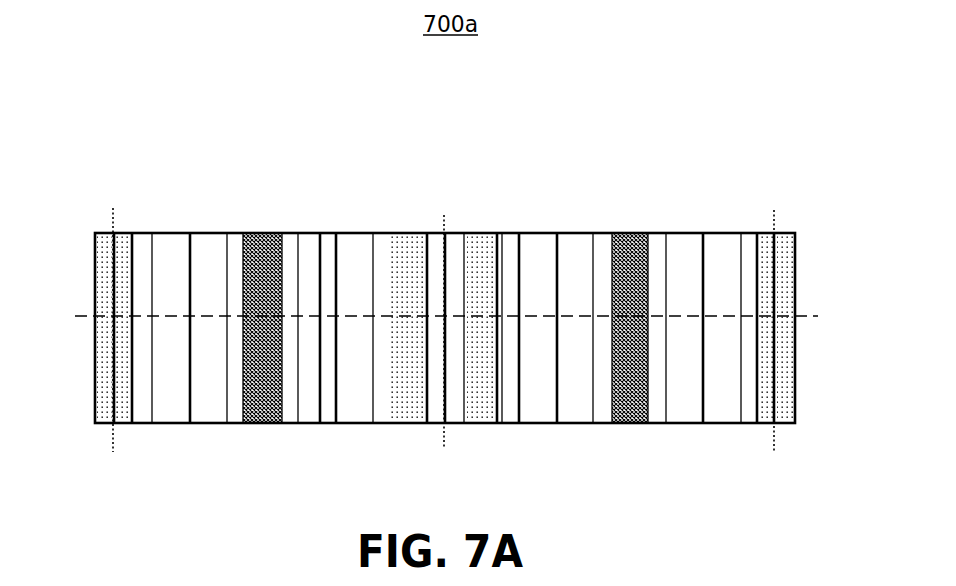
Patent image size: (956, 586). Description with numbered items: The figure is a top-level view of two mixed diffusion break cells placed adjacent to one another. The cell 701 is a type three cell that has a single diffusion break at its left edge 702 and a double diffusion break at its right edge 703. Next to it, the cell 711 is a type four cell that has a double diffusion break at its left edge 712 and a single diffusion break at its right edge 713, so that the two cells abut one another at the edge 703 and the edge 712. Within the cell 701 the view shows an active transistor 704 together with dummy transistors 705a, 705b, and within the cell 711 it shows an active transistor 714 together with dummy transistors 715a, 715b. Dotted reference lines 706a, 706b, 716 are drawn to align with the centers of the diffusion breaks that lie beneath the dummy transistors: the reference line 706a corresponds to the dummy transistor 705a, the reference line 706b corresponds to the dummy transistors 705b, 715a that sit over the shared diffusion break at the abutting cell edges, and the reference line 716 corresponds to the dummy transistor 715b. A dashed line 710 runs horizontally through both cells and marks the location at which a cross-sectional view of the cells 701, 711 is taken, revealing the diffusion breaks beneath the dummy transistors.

The cell 701 is at (173, 235).
The left edge of cell 702 is at (110, 402).
The right edge of cell 703 is at (447, 400).
The active transistor 704 is at (251, 235).
The dummy transistor 705a is at (104, 242).
The dummy transistor 705b is at (407, 245).
The reference line 706a is at (117, 218).
The reference line 706b is at (443, 217).
The line 710 is at (803, 317).
The cell 711 is at (542, 235).
The left edge of cell 712 is at (445, 400).
The right edge of cell 713 is at (775, 403).
The active transistor 714 is at (618, 235).
The dummy transistor 715a is at (484, 250).
The dummy transistor 715b is at (786, 262).
The reference line 716 is at (777, 215).